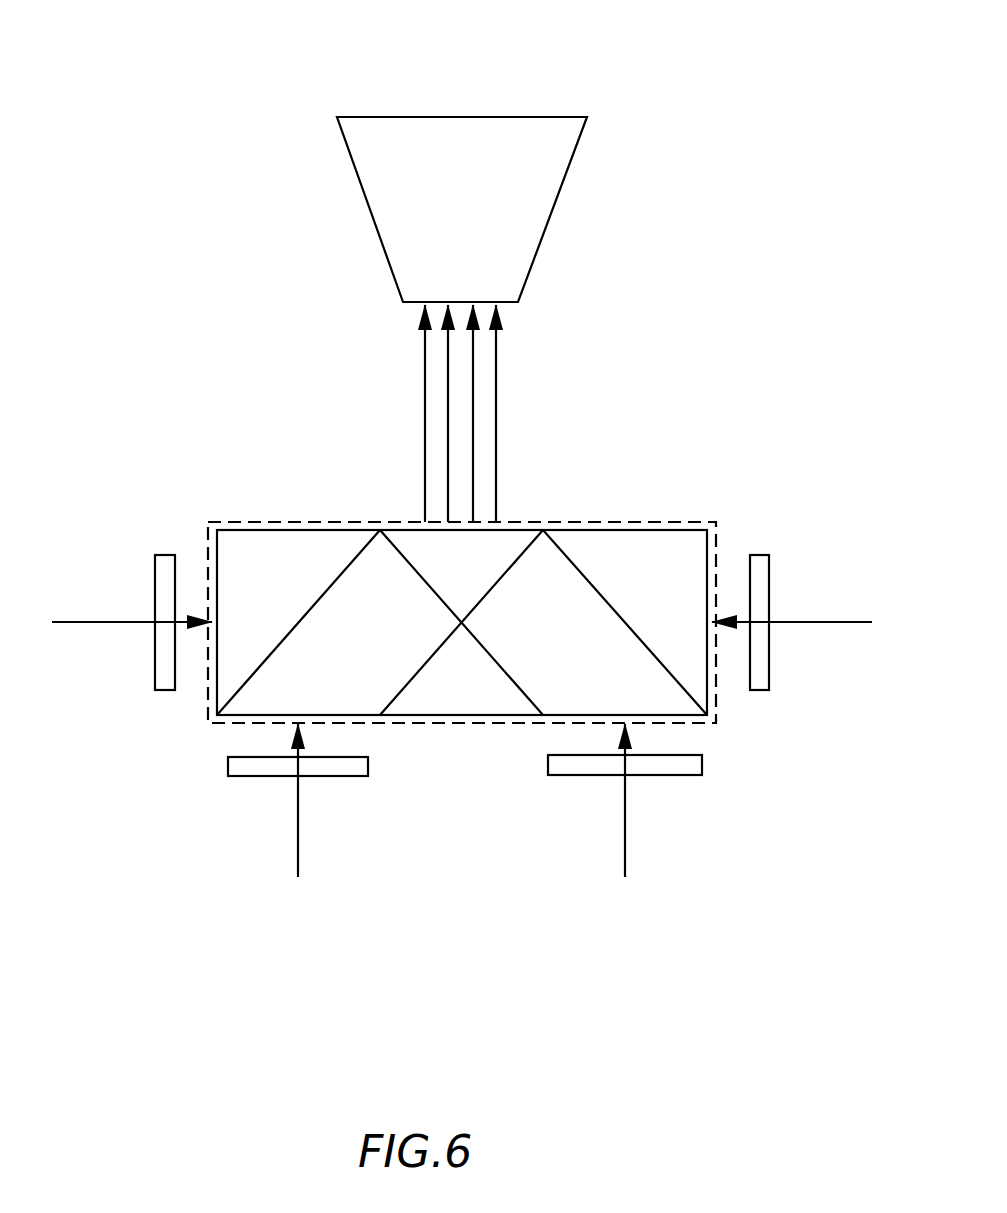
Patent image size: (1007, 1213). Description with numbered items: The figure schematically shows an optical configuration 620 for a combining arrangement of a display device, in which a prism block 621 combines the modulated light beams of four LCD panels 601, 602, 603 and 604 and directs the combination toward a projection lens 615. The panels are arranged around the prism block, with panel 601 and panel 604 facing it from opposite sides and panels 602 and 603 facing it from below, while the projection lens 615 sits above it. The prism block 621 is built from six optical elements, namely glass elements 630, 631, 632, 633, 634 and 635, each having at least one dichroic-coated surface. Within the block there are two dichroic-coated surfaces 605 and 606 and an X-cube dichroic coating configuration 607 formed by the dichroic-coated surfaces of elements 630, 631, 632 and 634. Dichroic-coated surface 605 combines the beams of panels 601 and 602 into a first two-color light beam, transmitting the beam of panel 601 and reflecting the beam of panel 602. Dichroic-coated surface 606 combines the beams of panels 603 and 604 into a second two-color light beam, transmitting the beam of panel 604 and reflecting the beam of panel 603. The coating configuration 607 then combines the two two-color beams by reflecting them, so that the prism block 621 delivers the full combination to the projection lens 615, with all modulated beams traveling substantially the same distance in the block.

The optical configuration 620 is at (95, 148).
The prism block 621 is at (683, 518).
The projection lens 615 is at (548, 228).
The glass element 630 is at (430, 690).
The dichroic-coated surface 605 is at (335, 585).
The glass element 632 is at (445, 560).
The dichroic-coated surface 606 is at (600, 585).
The glass element 633 is at (680, 600).
The glass element 635 is at (265, 590).
The glass element 634 is at (277, 693).
The glass element 631 is at (662, 692).
The X-cube dichroic coating configuration 607 is at (462, 628).
The LCD panel 601 is at (155, 595).
The LCD panel 602 is at (262, 777).
The LCD panel 603 is at (582, 776).
The LCD panel 604 is at (769, 595).